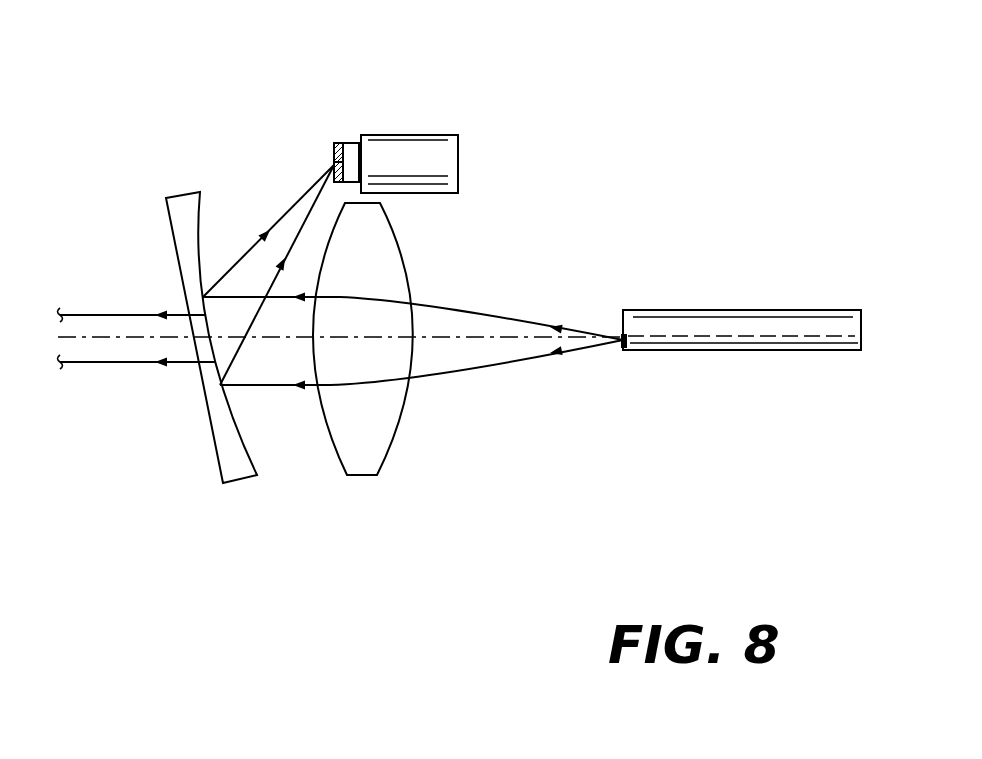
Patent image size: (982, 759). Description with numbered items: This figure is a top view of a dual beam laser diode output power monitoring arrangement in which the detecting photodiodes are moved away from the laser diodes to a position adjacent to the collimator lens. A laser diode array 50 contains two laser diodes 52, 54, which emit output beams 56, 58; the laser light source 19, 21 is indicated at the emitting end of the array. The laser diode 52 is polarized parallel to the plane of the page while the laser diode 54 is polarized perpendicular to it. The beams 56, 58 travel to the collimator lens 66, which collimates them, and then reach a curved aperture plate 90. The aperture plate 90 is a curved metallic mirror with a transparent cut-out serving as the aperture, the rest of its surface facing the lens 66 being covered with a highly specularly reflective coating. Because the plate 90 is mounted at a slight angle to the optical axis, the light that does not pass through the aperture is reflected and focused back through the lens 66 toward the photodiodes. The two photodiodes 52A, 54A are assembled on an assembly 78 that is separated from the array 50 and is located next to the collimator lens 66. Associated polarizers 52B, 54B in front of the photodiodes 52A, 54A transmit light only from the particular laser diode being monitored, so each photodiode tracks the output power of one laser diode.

The laser light source 19 is at (697, 377).
The laser light source 21 is at (640, 365).
The array 50 is at (753, 325).
The laser diode 52 is at (600, 379).
The laser diode 54 is at (622, 345).
The photodiode 52A is at (346, 101).
The photodiode 54A is at (352, 143).
The polarizer 52B is at (261, 120).
The polarizer 54B is at (334, 146).
The output beam 56 is at (512, 352).
The output beam 58 is at (287, 209).
The collimation lens 66 is at (367, 478).
The assembly 78 is at (410, 148).
The aperture plate 90 is at (242, 467).